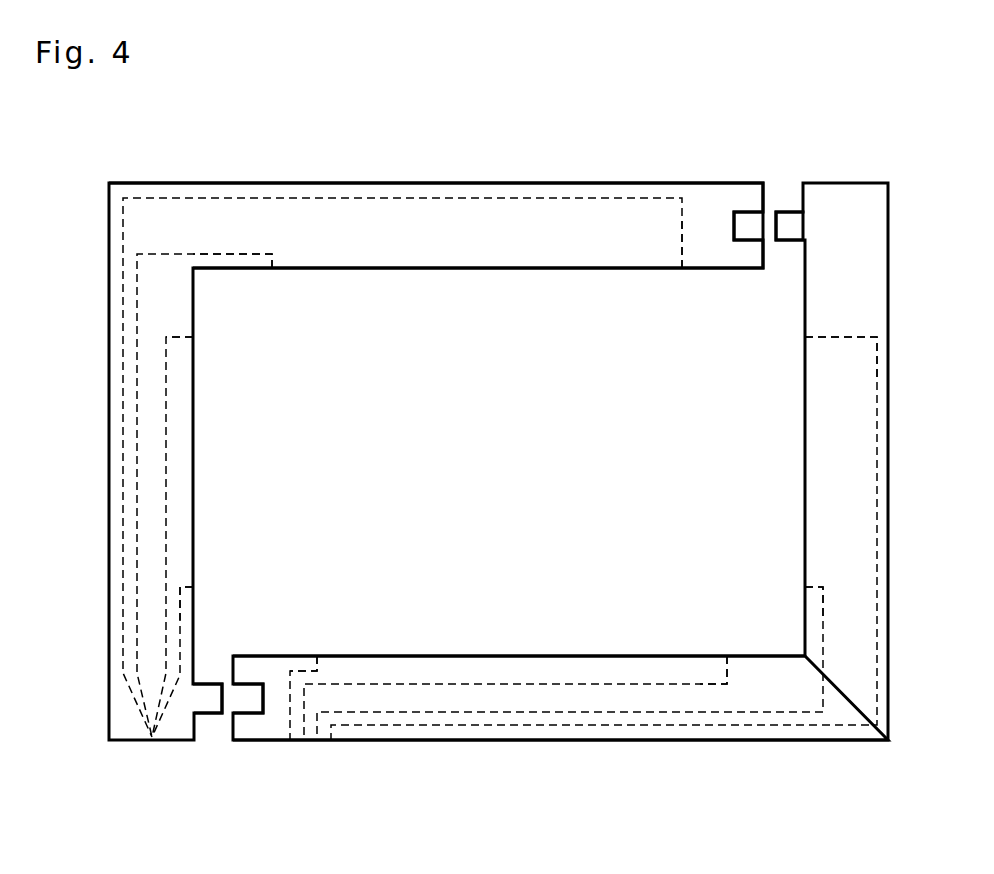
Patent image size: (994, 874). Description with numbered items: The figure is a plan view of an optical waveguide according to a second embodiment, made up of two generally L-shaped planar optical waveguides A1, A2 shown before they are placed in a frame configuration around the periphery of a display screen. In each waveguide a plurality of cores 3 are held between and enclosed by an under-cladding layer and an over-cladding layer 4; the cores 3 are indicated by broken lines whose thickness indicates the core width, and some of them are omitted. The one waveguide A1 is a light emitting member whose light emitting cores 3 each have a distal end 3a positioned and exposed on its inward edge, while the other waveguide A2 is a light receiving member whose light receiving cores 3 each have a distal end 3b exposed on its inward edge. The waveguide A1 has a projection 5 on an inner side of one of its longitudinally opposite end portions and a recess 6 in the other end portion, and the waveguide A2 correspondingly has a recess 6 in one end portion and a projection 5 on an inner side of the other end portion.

The cores 3 is at (178, 254).
The distal end 3a is at (272, 268).
The distal end 3b is at (803, 340).
The over-cladding layer 4 is at (466, 215).
The projection 5 is at (790, 223).
The recess 6 is at (742, 223).
The generally L-shaped planar optical waveguide A1 is at (393, 180).
The generally L-shaped planar optical waveguide A2 is at (523, 748).